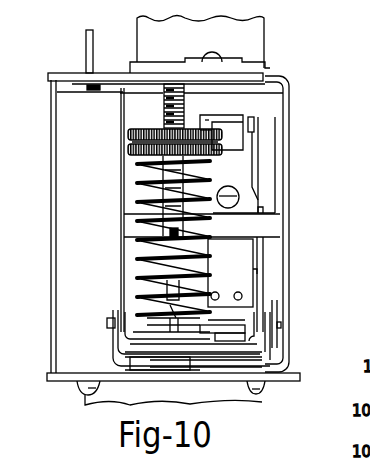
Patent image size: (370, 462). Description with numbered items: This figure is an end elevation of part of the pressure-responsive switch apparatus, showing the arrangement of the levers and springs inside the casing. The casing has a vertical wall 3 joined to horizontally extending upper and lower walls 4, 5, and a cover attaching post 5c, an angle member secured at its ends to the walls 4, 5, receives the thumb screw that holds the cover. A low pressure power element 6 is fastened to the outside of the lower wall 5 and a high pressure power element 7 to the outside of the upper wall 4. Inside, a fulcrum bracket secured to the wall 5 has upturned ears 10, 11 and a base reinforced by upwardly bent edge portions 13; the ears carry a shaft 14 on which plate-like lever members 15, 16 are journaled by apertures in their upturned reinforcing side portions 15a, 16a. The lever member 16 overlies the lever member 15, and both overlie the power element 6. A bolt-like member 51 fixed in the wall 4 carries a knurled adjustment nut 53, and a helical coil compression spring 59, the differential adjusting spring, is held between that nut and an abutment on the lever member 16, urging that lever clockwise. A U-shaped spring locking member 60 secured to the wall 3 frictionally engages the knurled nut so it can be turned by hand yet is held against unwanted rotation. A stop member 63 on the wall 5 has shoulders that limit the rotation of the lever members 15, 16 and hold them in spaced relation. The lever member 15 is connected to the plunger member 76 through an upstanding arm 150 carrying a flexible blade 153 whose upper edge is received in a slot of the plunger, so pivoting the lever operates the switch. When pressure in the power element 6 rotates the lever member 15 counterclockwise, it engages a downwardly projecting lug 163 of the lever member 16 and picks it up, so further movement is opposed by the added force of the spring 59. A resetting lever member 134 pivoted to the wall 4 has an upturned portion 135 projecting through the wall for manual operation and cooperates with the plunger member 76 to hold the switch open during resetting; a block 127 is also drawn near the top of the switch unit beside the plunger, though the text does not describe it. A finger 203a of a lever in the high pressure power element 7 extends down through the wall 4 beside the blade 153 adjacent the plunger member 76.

The vertical wall 3 is at (290, 200).
The upper wall 4 is at (70, 73).
The lower wall 5 is at (75, 381).
The cover attaching post 5c is at (97, 198).
The low pressure power element 6 is at (256, 405).
The high pressure power element 7 is at (270, 42).
The upturned ear 10 is at (109, 349).
The upturned ear 11 is at (275, 360).
The upwardly bent edge portion 13 is at (138, 368).
The shaft 14 is at (281, 322).
The lever member 15 is at (265, 345).
The upturned reenforcing side portion 15a is at (120, 308).
The lever member 16 is at (245, 334).
The upturned reenforcing side portion 16a is at (126, 306).
The bolt-like member 51 is at (184, 107).
The adjustment nut 53 is at (141, 129).
The helical coil compression spring 59 is at (138, 238).
The U-shaped spring locking member 60 is at (273, 227).
The stop member 63 is at (266, 382).
The plunger member 76 is at (233, 142).
The block 127 is at (238, 124).
The lever member 134 is at (114, 95).
The upturned portion 135 is at (86, 34).
The upstanding arm 150 is at (263, 258).
The flexible blade 153 is at (219, 260).
The lug 163 is at (197, 352).
The finger 203a is at (254, 126).